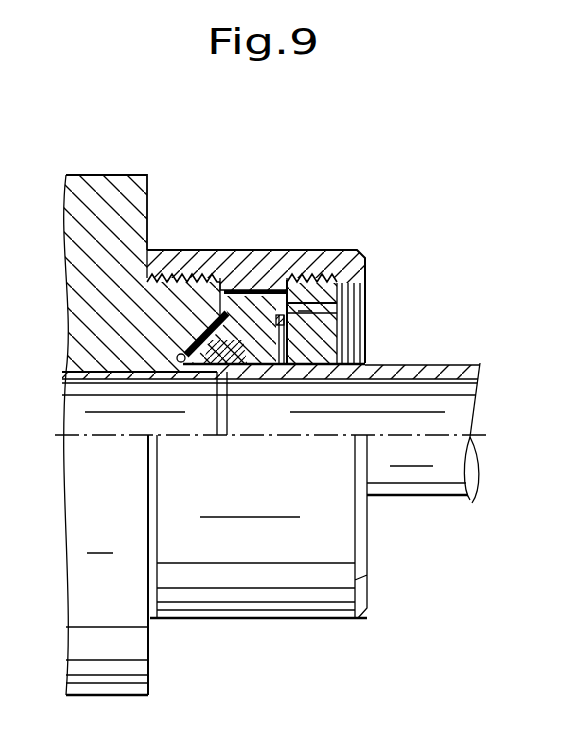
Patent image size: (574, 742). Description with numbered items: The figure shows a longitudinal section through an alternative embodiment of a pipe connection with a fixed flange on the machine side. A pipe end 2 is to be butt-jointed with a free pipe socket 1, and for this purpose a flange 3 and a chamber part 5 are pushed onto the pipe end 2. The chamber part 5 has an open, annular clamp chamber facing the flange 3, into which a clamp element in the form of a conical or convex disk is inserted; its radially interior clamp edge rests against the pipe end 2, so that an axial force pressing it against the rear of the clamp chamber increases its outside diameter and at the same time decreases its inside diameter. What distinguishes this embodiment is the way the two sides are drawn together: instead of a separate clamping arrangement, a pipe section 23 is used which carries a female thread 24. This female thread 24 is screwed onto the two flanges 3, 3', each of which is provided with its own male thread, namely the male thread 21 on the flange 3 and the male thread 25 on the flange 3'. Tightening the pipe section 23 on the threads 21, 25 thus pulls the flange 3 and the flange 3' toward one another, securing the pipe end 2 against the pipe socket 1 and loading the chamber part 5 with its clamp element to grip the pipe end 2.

The pipe socket 1 is at (200, 369).
The pipe end 2 is at (450, 471).
The flange 3 is at (356, 321).
The flange 3' is at (198, 282).
The chamber part 5 is at (260, 290).
The male thread 21 is at (171, 270).
The pipe section 23 is at (303, 253).
The female thread 24 is at (364, 258).
The male thread 25 is at (320, 276).